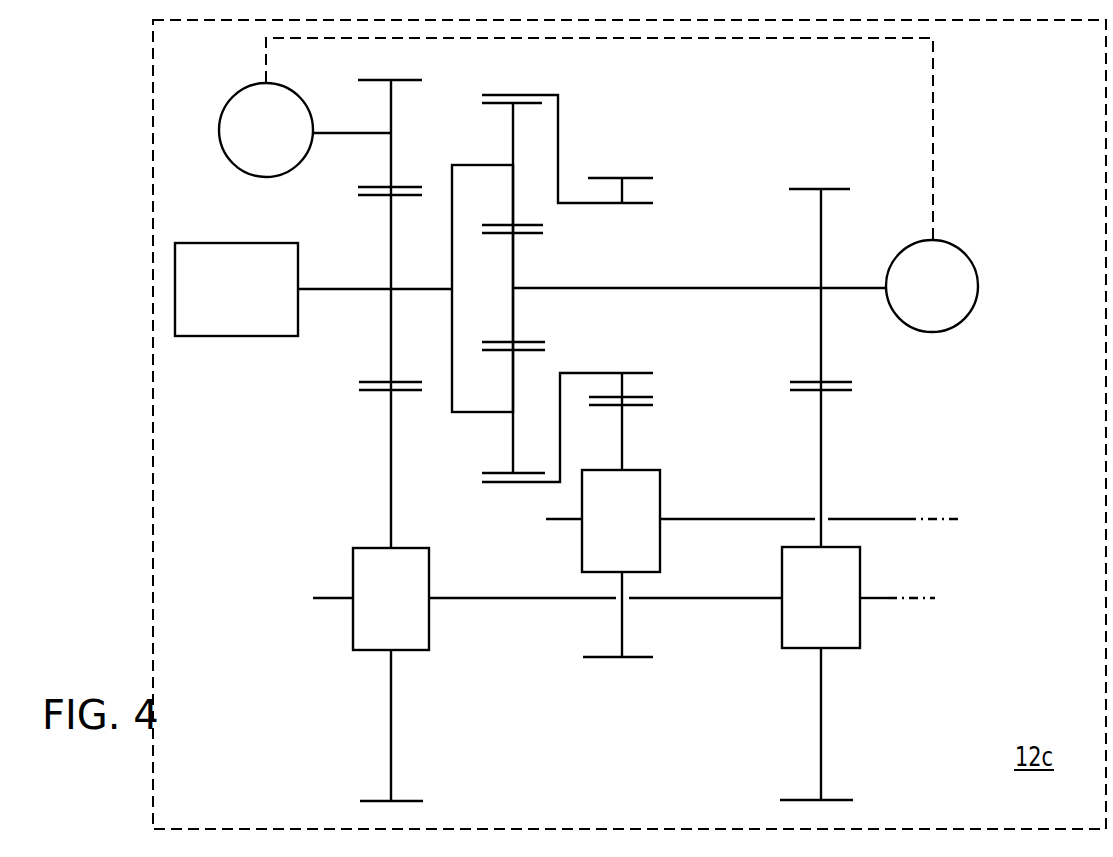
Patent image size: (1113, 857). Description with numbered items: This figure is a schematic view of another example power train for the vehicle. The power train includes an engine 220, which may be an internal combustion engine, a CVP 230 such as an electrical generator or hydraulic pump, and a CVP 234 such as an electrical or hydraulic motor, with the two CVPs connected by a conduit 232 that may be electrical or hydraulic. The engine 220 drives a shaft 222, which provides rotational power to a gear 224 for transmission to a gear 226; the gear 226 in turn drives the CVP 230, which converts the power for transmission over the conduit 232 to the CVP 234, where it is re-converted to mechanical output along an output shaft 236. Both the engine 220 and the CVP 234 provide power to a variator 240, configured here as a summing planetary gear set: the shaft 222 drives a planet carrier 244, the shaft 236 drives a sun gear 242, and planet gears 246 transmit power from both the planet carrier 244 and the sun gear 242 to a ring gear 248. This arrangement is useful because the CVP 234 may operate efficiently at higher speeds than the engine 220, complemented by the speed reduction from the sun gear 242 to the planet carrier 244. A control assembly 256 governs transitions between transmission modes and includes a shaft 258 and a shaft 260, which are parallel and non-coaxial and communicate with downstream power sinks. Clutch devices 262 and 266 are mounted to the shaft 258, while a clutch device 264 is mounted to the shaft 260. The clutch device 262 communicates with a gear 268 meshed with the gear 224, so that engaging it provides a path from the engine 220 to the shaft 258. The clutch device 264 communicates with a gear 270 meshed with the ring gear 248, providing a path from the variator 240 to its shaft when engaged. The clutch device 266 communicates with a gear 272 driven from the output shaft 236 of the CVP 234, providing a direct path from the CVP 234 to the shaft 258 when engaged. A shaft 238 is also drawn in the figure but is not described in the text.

The engine 220 is at (258, 243).
The shaft 222 is at (368, 289).
The gear 224 is at (391, 347).
The gear 226 is at (391, 162).
The CVP 230 is at (257, 82).
The conduit 232 is at (933, 143).
The CVP 234 is at (953, 240).
The output shaft 236 is at (858, 287).
The shaft 238 is at (820, 238).
The variator 240 is at (636, 156).
The sun gear 242 is at (513, 316).
The planet carrier 244 is at (470, 163).
The planet gears 246 is at (513, 200).
The ring gear 248 is at (558, 145).
The control assembly 256 is at (348, 711).
The shaft 258 is at (737, 598).
The shaft 260 is at (892, 519).
The clutch device 262 is at (353, 563).
The clutch device 264 is at (661, 493).
The clutch device 266 is at (860, 610).
The gear 268 is at (391, 447).
The gear 270 is at (622, 626).
The gear 272 is at (822, 485).